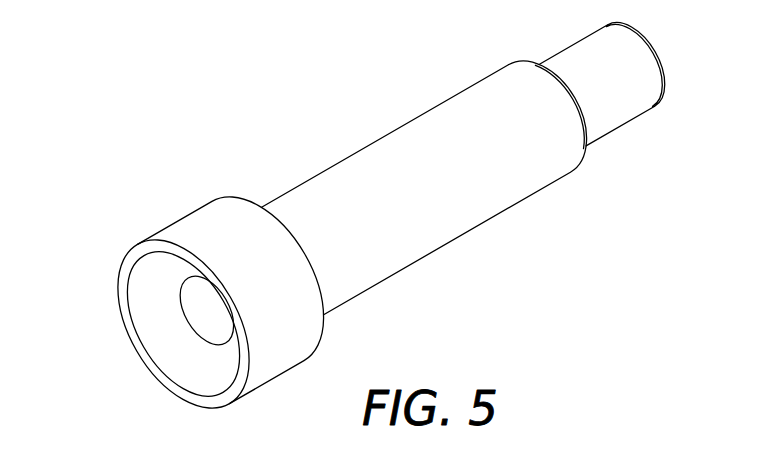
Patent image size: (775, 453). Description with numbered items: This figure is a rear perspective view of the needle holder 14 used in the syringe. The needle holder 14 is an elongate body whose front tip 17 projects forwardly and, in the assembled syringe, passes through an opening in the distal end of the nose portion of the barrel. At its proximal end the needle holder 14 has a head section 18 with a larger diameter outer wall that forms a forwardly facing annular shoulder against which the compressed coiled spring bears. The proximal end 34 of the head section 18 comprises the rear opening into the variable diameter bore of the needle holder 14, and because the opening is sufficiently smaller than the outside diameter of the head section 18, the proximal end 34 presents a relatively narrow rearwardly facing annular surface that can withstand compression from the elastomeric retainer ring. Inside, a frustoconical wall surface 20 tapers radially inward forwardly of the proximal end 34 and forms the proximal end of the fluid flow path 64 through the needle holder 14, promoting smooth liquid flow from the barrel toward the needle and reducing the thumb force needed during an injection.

The needle holder 14 is at (348, 126).
The front tip 17 is at (627, 112).
The head section 18 is at (183, 230).
The wall surface 20 is at (152, 300).
The proximal end 34 is at (162, 377).
The fluid flow path 64 is at (213, 311).